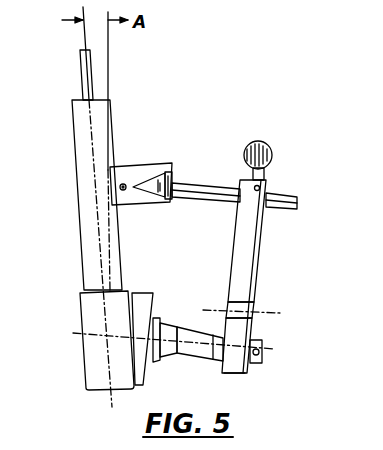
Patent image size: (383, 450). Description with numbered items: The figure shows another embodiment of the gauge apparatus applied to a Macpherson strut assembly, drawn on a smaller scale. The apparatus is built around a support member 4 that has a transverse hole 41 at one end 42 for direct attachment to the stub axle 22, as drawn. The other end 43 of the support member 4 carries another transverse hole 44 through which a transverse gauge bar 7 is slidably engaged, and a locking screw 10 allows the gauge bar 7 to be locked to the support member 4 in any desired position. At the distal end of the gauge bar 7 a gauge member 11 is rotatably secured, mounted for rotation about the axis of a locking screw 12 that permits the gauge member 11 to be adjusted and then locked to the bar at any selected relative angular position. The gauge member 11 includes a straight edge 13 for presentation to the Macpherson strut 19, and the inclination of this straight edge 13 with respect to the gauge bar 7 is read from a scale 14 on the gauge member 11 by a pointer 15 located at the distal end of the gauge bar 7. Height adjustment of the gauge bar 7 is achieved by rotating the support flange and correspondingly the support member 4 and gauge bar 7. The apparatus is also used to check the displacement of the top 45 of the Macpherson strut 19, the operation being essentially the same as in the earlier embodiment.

The support member 4 is at (252, 278).
The gauge bar 7 is at (222, 203).
The locking screw 10 is at (262, 143).
The gauge member 11 is at (148, 172).
The locking screw 12 is at (124, 181).
The straight edge 13 is at (110, 177).
The scale 14 is at (173, 175).
The pointer 15 is at (158, 200).
The Macpherson strut 19 is at (88, 218).
The stub axle 22 is at (191, 355).
The transverse hole 41 is at (254, 343).
The end of support member 42 is at (235, 370).
The other end of support member 43 is at (260, 186).
The transverse hole 44 is at (280, 208).
The top of Macpherson strut 45 is at (92, 58).